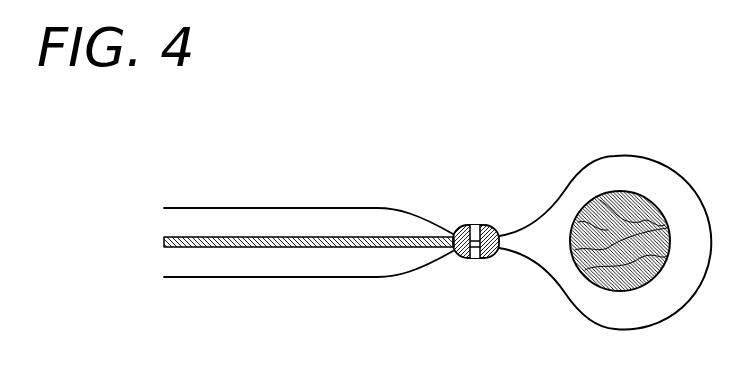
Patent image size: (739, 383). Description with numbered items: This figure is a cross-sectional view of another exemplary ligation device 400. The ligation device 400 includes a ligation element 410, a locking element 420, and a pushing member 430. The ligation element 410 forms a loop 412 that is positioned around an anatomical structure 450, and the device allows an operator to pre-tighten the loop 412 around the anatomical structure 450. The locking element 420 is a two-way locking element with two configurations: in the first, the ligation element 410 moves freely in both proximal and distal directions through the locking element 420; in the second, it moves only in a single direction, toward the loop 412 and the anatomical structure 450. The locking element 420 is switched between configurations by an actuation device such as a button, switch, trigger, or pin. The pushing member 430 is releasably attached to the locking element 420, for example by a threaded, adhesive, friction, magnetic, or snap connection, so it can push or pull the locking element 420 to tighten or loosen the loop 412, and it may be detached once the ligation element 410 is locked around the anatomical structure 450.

The ligation device 400 is at (218, 170).
The ligation element 410 is at (537, 222).
The loop 412 is at (572, 175).
The locking element 420 is at (490, 254).
The pushing member 430 is at (350, 245).
The anatomical structure 450 is at (636, 218).